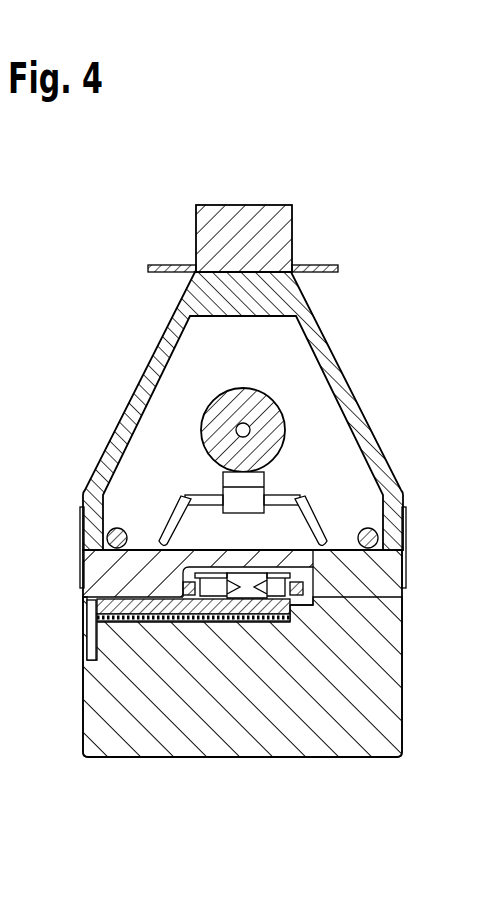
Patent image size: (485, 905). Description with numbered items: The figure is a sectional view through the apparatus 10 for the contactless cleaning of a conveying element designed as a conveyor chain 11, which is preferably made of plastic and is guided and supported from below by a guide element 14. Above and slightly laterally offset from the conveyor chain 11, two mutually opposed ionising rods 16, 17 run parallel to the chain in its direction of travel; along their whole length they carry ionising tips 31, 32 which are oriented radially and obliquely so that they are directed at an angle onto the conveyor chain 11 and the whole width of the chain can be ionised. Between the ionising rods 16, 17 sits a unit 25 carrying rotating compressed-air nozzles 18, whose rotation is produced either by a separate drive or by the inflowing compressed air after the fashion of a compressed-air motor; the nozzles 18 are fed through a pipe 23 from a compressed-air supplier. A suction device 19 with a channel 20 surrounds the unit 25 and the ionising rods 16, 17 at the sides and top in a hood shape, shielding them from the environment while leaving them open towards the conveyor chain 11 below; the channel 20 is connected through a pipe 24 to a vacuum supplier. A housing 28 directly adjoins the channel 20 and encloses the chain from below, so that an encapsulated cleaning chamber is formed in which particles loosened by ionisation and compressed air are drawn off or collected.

The apparatus 10 is at (391, 225).
The conveyor chain 11 is at (268, 578).
The guide element 14 is at (290, 618).
The ionising rod 16 is at (82, 530).
The ionising rod 17 is at (404, 532).
The compressed-air nozzle 18 is at (165, 505).
The suction device 19 is at (268, 266).
The channel 20 is at (141, 377).
The pipe 23 is at (252, 418).
The pipe 24 is at (254, 218).
The unit 25 is at (292, 466).
The housing 28 is at (162, 740).
The ionising tip 31 is at (160, 555).
The ionising tip 32 is at (360, 550).